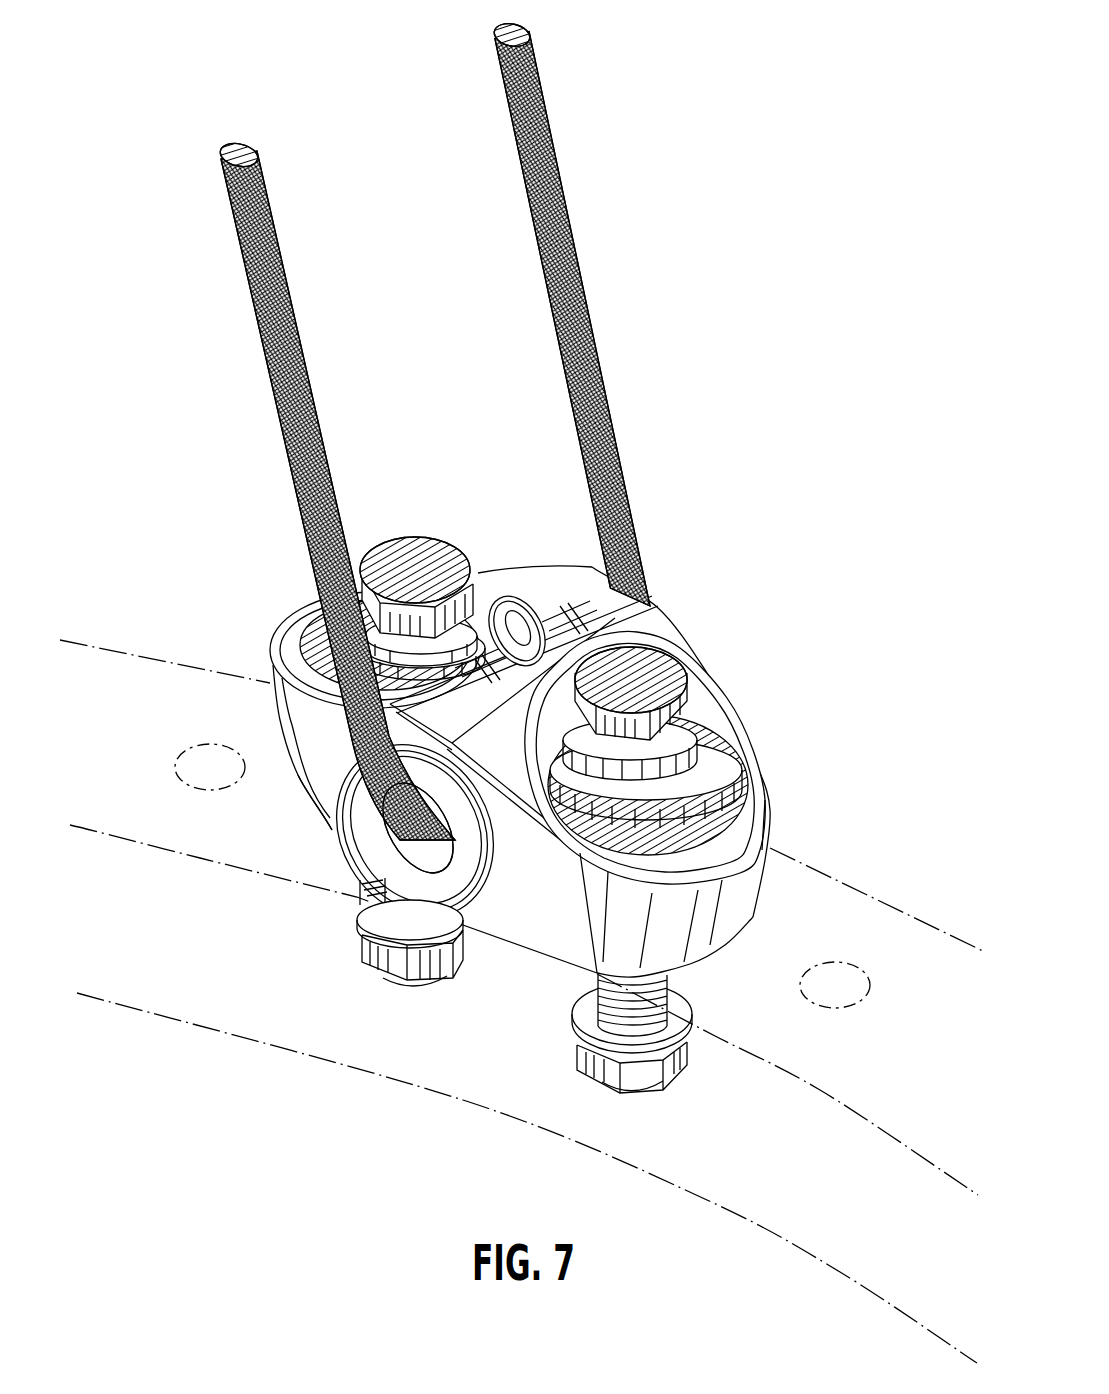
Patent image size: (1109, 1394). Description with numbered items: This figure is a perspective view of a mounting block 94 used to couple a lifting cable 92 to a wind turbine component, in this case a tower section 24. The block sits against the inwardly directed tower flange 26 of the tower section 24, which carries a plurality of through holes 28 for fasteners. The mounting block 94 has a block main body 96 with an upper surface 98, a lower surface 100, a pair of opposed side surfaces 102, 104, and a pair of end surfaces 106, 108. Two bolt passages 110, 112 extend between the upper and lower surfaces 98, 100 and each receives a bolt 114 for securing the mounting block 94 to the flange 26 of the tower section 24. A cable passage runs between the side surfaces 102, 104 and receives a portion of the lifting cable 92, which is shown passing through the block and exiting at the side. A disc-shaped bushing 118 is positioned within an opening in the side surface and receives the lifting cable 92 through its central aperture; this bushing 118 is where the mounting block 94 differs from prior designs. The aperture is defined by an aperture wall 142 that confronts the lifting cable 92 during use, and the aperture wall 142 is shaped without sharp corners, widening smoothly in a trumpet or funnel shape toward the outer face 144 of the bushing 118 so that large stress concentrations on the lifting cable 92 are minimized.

The tower section 24 is at (945, 928).
The tower flange 26 is at (246, 1036).
The through holes 28 is at (178, 766).
The lifting cable 92 is at (607, 386).
The mounting block 94 is at (781, 742).
The block main body 96 is at (779, 826).
The upper surface 98 is at (553, 568).
The lower surface 100 is at (308, 822).
The side surface 102 is at (300, 728).
The side surface 104 is at (727, 721).
The end surface 106 is at (740, 915).
The end surface 108 is at (276, 664).
The bolt passage 110 is at (702, 688).
The bolt passage 112 is at (497, 583).
The bolt 114 is at (426, 545).
The bushing 118 is at (421, 831).
The aperture wall 142 is at (363, 838).
The outer face 144 is at (338, 800).